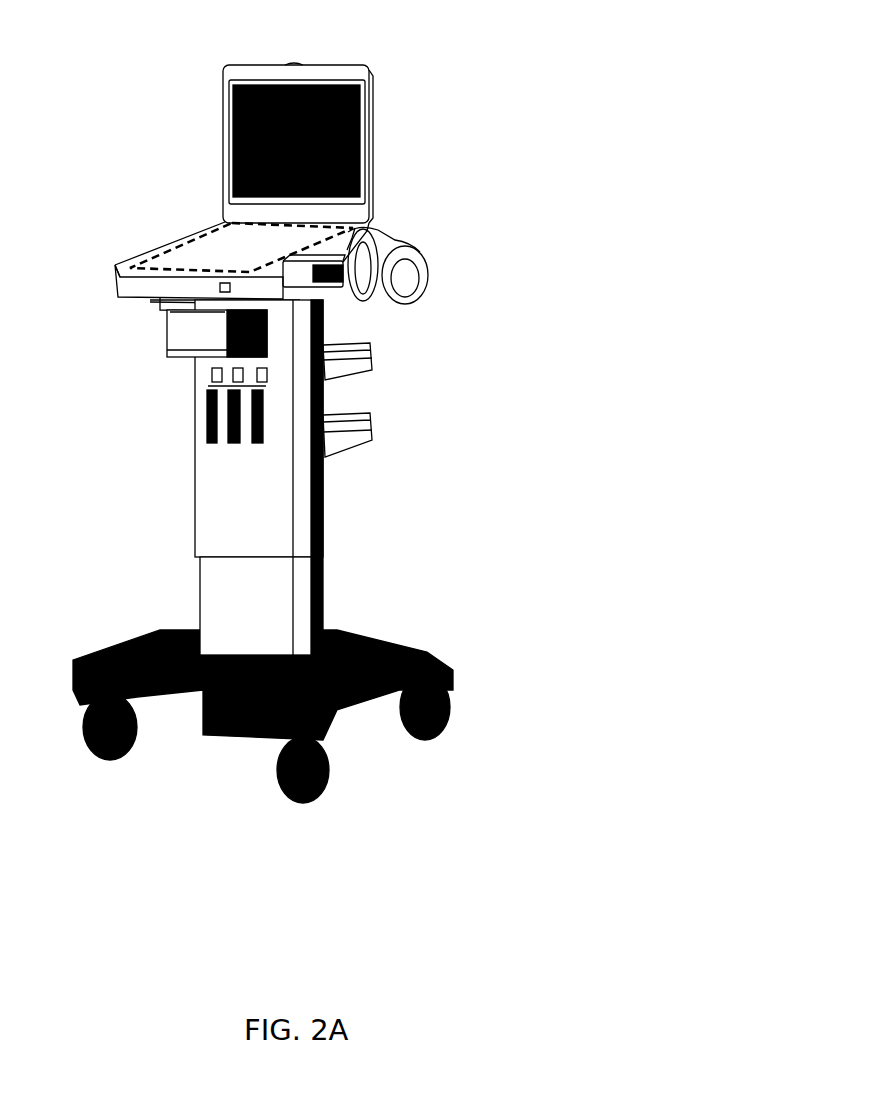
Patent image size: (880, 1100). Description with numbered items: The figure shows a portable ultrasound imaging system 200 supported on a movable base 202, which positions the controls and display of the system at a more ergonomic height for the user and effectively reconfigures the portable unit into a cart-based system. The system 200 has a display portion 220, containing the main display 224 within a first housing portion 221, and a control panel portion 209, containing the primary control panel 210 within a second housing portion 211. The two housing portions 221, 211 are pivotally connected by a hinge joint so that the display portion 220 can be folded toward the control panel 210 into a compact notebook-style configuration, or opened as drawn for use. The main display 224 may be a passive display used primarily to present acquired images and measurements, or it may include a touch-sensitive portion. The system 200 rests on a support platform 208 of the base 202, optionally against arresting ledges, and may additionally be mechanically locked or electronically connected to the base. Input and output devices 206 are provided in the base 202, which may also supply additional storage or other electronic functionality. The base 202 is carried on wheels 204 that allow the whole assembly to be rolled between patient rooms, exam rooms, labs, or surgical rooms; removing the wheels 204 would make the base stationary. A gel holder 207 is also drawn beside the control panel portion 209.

The portable ultrasound imaging system 200 is at (553, 28).
The movable base 202 is at (308, 509).
The wheels 204 is at (413, 740).
The input and output (I/O) devices 206 is at (212, 433).
The gel holder 207 is at (367, 223).
The support platform 208 is at (284, 298).
The control panel portion 209 is at (327, 248).
The primary control panel 210 is at (207, 233).
The second housing portion 211 is at (113, 268).
The display portion 220 is at (368, 150).
The first housing portion 221 is at (225, 83).
The main display 224 is at (360, 115).